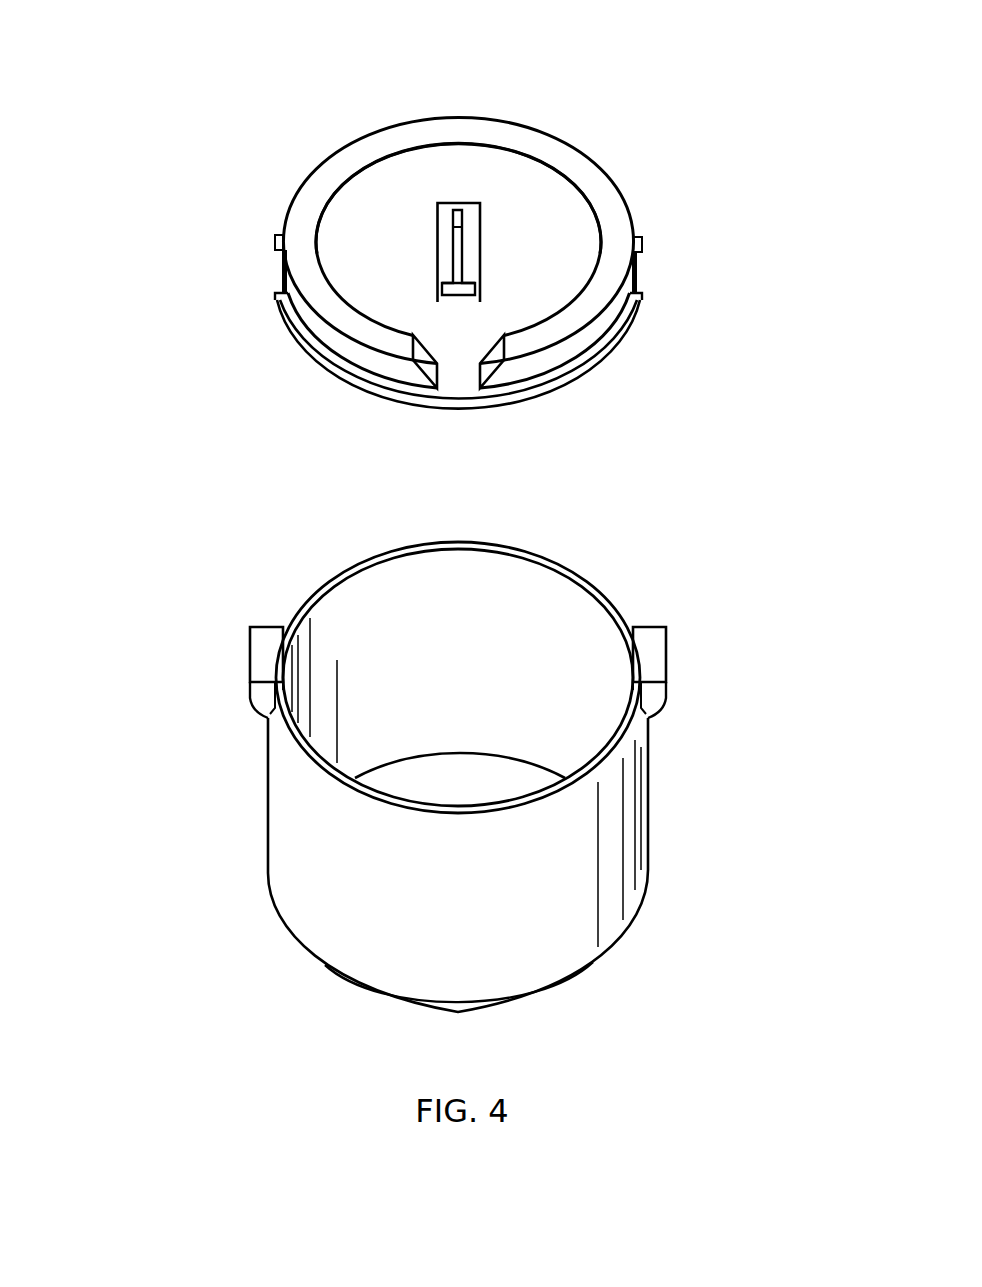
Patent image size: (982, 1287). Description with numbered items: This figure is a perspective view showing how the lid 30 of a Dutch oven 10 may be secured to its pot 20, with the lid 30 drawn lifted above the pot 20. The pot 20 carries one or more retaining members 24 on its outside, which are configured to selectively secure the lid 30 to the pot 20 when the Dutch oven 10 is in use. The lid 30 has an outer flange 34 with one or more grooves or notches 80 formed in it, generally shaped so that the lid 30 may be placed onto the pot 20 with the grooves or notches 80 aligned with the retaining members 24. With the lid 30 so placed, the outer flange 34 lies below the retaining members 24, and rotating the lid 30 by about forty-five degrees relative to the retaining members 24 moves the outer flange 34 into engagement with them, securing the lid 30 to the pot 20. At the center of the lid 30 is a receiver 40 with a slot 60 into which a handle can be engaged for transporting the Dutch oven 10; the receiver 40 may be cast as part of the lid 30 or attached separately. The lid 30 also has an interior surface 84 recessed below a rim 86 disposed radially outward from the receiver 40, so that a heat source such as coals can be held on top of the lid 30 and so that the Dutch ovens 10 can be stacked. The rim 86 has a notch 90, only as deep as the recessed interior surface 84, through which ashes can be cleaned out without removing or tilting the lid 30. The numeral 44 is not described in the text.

The Dutch oven 10 is at (192, 478).
The pot 20 is at (672, 836).
The retaining members 24 is at (265, 697).
The lid 30 is at (612, 170).
The outer flange 34 is at (600, 347).
The receiver 40 is at (418, 226).
The latch arms 44 is at (445, 283).
The slot 60 is at (455, 312).
The grooves or notches 80 is at (256, 273).
The interior surface 84 is at (495, 182).
The rim 86 is at (621, 218).
The notch 90 is at (467, 377).